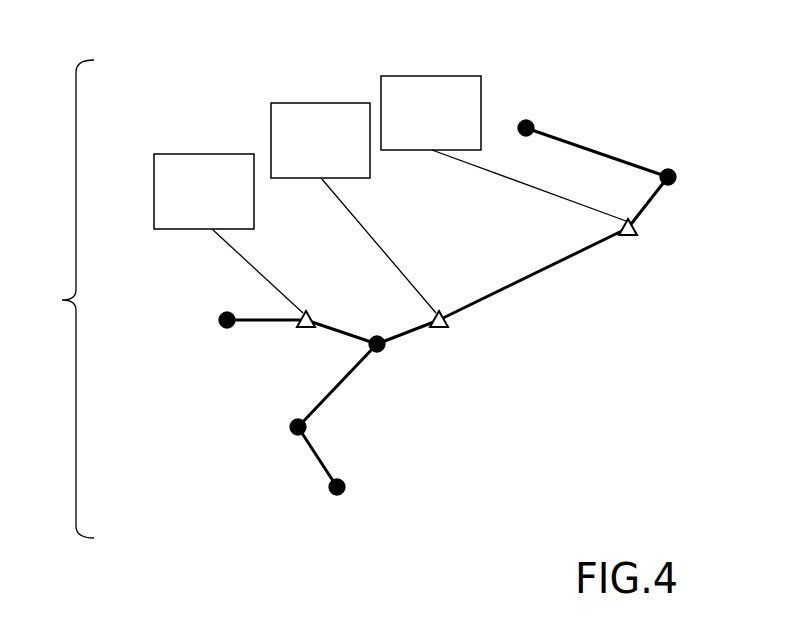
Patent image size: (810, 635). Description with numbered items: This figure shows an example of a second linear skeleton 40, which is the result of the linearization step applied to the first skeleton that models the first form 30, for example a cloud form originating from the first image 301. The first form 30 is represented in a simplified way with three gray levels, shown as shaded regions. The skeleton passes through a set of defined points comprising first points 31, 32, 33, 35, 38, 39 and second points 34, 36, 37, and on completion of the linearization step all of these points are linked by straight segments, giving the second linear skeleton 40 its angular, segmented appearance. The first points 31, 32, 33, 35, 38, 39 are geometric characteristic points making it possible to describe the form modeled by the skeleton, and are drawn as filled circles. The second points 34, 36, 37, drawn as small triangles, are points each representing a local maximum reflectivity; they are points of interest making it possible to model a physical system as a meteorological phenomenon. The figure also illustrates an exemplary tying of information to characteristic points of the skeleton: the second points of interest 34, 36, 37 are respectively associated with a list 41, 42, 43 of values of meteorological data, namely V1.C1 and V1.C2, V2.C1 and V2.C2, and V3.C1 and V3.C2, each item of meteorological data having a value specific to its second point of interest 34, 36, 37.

The first form 30 is at (423, 435).
The first point 31 is at (340, 493).
The first point 32 is at (291, 434).
The first point 33 is at (223, 323).
The second point of interest 34 is at (301, 329).
The first point 35 is at (371, 339).
The second point of interest 36 is at (437, 311).
The second point of interest 37 is at (629, 237).
The first point 38 is at (669, 171).
The first point 39 is at (526, 121).
The second linear skeleton 40 is at (537, 273).
The list of values of meteorological data 41 is at (213, 153).
The list of values of meteorological data 42 is at (324, 103).
The list of values of meteorological data 43 is at (432, 76).
The first image 301 is at (52, 299).